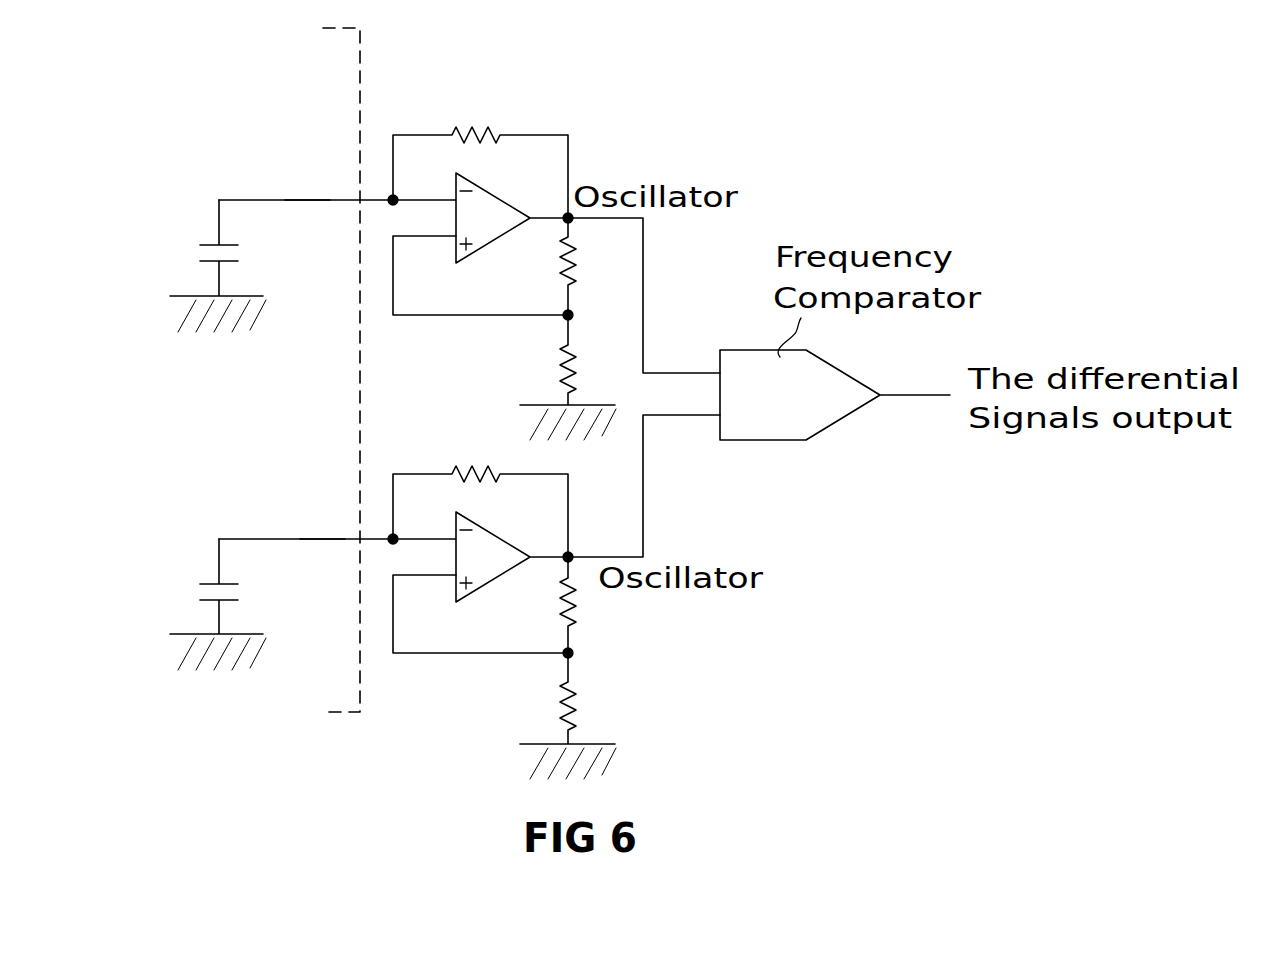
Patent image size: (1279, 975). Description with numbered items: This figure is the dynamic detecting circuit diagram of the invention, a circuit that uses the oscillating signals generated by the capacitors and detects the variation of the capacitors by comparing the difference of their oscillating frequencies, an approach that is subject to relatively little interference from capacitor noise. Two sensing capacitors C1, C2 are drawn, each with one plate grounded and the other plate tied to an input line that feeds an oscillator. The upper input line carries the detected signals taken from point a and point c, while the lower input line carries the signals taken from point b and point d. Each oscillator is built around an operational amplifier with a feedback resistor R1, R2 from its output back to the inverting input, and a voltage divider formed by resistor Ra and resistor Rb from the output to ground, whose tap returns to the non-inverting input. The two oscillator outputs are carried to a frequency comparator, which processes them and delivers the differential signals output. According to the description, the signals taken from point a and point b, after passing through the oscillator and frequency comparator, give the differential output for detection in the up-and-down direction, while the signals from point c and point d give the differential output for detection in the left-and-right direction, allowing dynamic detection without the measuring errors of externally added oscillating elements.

The point a is at (262, 200).
The point b is at (278, 539).
The point c is at (300, 200).
The point d is at (316, 539).
The first sensing capacitor C1 is at (214, 266).
The second sensing capacitor C2 is at (214, 604).
The first oscillator feedback resistor R1 is at (480, 154).
The second oscillator feedback resistor R2 is at (480, 493).
The voltage divider resistor Ra is at (586, 435).
The voltage divider resistor Rb is at (568, 547).